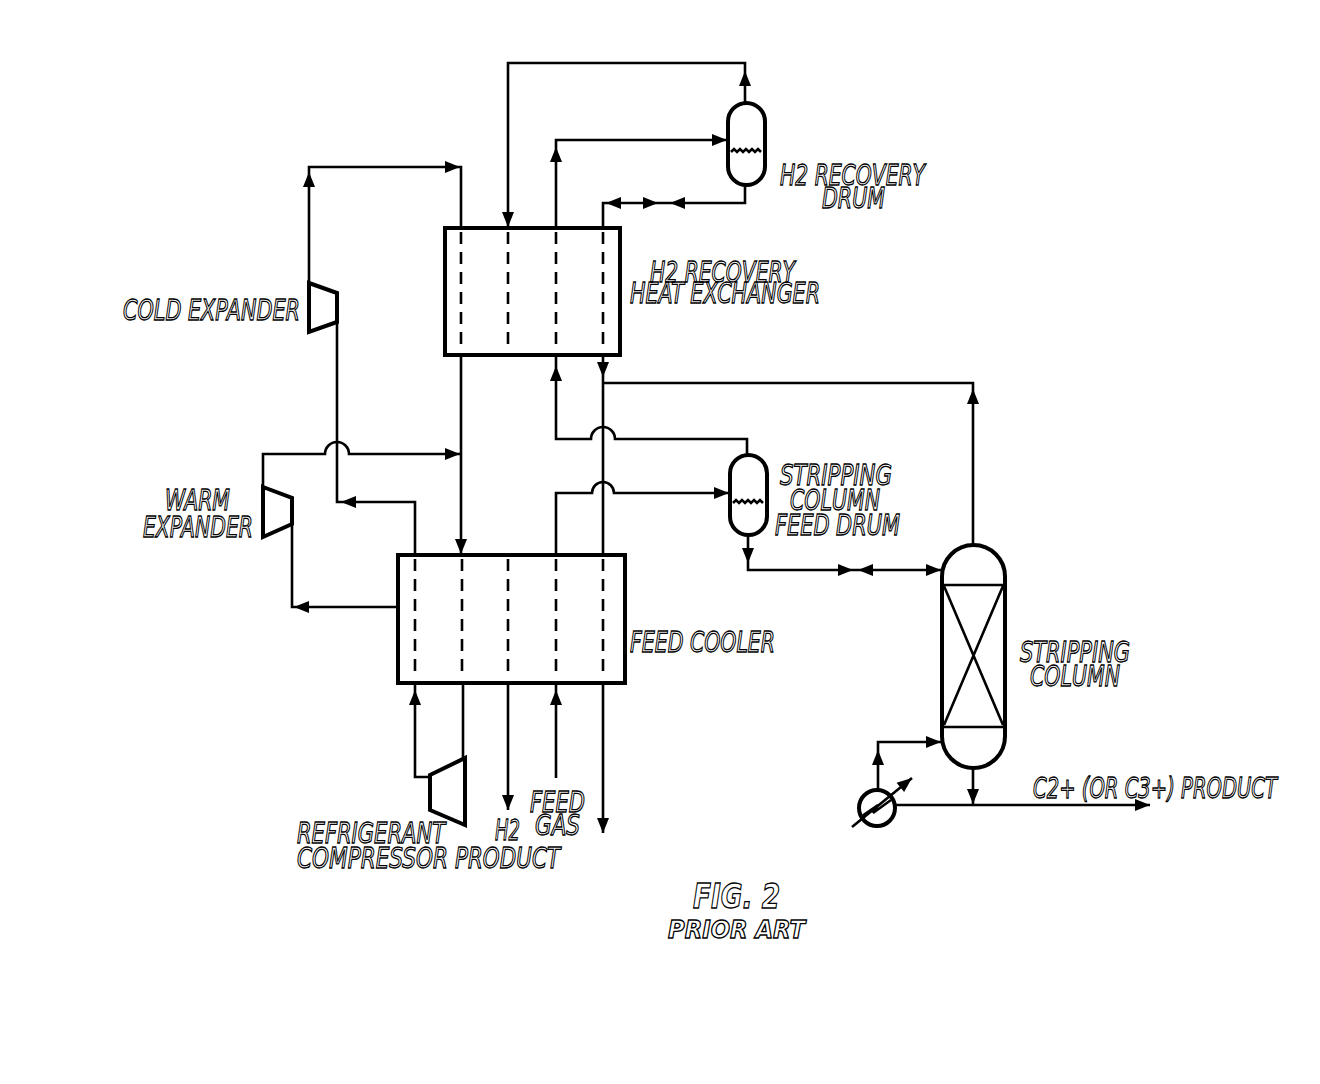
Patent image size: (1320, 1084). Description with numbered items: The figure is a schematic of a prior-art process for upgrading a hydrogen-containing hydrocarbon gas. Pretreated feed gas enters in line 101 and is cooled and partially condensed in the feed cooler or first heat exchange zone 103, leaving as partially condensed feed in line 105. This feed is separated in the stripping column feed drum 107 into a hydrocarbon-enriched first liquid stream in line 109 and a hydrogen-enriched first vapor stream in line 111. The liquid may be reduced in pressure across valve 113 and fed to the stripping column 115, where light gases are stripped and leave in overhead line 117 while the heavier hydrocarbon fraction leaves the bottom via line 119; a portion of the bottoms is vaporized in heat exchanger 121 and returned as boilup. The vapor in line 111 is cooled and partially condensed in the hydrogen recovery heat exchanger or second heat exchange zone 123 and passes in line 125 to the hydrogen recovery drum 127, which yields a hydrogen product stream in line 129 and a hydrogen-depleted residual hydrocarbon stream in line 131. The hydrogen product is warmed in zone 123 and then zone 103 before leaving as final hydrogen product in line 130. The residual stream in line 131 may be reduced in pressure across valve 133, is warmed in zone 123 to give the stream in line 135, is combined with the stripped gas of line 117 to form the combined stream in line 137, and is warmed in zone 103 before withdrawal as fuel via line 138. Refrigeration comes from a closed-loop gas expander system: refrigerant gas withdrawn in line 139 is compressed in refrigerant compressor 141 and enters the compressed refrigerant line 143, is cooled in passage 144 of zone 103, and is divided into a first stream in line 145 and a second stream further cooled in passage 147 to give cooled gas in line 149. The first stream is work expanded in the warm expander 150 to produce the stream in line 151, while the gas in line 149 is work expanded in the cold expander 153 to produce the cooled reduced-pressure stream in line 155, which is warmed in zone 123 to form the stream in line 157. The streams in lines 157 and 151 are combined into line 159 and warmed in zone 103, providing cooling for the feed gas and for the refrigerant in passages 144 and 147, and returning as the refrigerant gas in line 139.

The feed gas line 101 is at (556, 715).
The feed cooler (first heat exchange zone) 103 is at (625, 590).
The partially condensed feed line 105 is at (630, 493).
The stripping column feed drum 107 is at (762, 460).
The first liquid stream line 109 is at (783, 570).
The first vapor stream line 111 is at (690, 439).
The valve 113 is at (855, 570).
The stripping column 115 is at (1000, 550).
The overhead line 117 is at (822, 383).
The bottoms line 119 is at (1038, 805).
The heat exchanger 121 is at (860, 795).
The hydrogen recovery heat exchanger (second heat exchange zone) 123 is at (445, 242).
The partially condensed stream line 125 is at (590, 140).
The hydrogen recovery drum 127 is at (765, 125).
The hydrogen product stream line 129 is at (507, 87).
The final hydrogen product line 130 is at (508, 715).
The hydrogen-depleted residual hydrocarbon stream line 131 is at (748, 203).
The valve 133 is at (668, 203).
The warmed stream line 135 is at (612, 368).
The combined stream line 137 is at (603, 400).
The residual hydrogen-hydrocarbon stream line 138 is at (603, 715).
The refrigerant gas line 139 is at (462, 706).
The refrigerant compressor 141 is at (430, 800).
The compressed refrigerant stream 143 is at (415, 750).
The heat exchanger passage 144 is at (412, 655).
The first refrigerant gas stream line 145 is at (330, 607).
The heat exchanger passage 147 is at (412, 580).
The cooled refrigerant gas line 149 is at (337, 398).
The warm expander 150 is at (268, 537).
The cooled work-expanded refrigerant gas stream line 151 is at (263, 470).
The cold expander 153 is at (337, 305).
The cooled reduced-pressure refrigerant gas stream line 155 is at (309, 217).
The warmed reduced-pressure refrigerant gas stream line 157 is at (461, 405).
The combined refrigerant stream line 159 is at (461, 487).